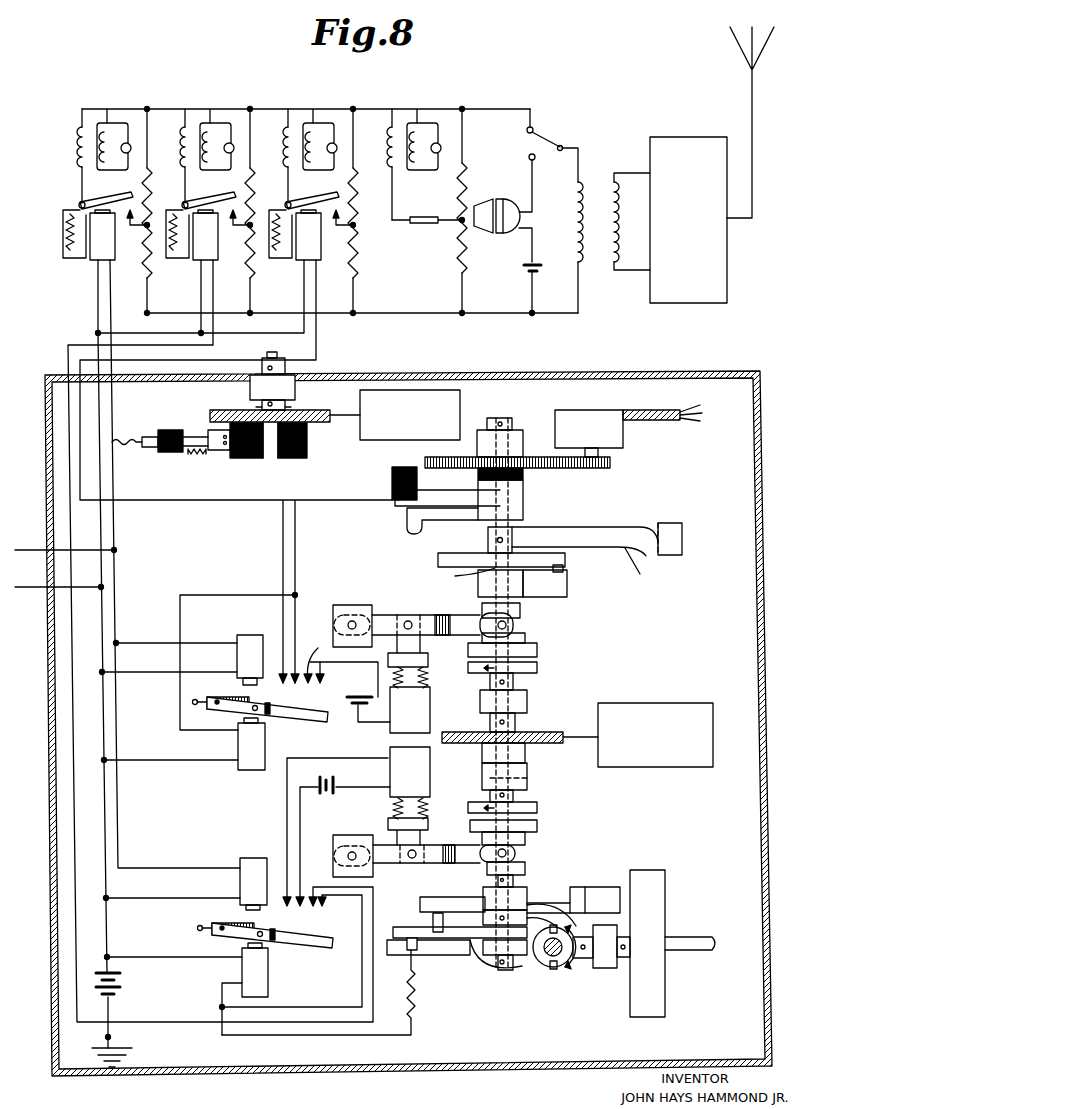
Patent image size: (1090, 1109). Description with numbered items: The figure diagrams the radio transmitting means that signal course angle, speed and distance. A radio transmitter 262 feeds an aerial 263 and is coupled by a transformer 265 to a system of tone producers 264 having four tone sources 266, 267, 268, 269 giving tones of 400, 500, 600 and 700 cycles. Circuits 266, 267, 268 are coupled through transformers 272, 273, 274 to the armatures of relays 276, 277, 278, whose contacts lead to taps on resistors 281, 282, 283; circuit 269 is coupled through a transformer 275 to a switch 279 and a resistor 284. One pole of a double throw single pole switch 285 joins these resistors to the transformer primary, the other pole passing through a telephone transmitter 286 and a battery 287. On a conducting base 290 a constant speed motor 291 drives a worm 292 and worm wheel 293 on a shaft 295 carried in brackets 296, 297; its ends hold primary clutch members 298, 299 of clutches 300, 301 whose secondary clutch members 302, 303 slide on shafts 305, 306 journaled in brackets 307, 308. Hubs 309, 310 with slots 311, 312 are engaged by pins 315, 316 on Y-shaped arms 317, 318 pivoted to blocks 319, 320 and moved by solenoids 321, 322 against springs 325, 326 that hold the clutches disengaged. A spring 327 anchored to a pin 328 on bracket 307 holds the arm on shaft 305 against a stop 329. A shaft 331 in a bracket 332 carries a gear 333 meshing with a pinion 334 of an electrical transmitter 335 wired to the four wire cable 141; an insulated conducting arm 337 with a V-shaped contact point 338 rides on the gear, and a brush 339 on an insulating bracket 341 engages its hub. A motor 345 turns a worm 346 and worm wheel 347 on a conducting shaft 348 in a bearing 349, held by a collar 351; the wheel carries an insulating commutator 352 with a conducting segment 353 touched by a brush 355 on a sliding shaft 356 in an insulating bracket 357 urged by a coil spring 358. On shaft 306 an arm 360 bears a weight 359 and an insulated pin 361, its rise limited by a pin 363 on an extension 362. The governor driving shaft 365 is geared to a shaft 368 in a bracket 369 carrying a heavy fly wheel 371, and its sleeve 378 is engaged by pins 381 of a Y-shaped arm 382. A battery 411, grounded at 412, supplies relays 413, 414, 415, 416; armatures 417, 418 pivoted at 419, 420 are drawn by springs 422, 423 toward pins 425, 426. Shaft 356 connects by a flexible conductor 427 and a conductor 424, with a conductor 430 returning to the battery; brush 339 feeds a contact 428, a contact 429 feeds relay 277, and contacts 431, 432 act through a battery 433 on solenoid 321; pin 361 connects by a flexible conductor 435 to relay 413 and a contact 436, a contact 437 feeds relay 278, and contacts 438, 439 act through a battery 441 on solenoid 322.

The four wire cable 141 is at (661, 421).
The radio transmitter 262 is at (727, 291).
The aerial 263 is at (735, 51).
The system of tone producers 264 is at (378, 336).
The transformer 265 is at (596, 172).
The tone source 266 is at (119, 126).
The tone source 267 is at (222, 126).
The tone source 268 is at (325, 126).
The tone source 269 is at (428, 126).
The transformer 272 is at (91, 125).
The transformer 273 is at (193, 125).
The transformer 274 is at (296, 125).
The transformer 275 is at (400, 124).
The relay 276 is at (92, 265).
The relay 277 is at (197, 262).
The relay 278 is at (300, 260).
The switch 279 is at (425, 218).
The resistor 281 is at (147, 270).
The resistor 282 is at (253, 272).
The resistor 283 is at (359, 263).
The resistor 284 is at (468, 182).
The double throw single pole switch 285 is at (556, 138).
The telephone transmitter 286 is at (506, 240).
The battery 287 is at (541, 272).
The base 290 is at (386, 1068).
The motor 291 is at (663, 703).
The worm 292 is at (525, 731).
The worm wheel 293 is at (554, 745).
The shaft 295 is at (528, 779).
The bracket 296 is at (528, 696).
The bracket 297 is at (482, 770).
The primary clutch member 298 is at (539, 668).
The primary clutch member 299 is at (539, 807).
The clutch 300 is at (438, 669).
The clutch 301 is at (438, 819).
The secondary clutch member 302 is at (539, 651).
The secondary clutch member 303 is at (539, 826).
The shaft 305 is at (460, 577).
The shaft 306 is at (497, 881).
The bracket 307 is at (568, 588).
The bracket 308 is at (527, 893).
The hub 309 is at (522, 612).
The hub 310 is at (527, 866).
The slot 311 is at (515, 627).
The slot 312 is at (518, 850).
The pin 315 is at (500, 622).
The pin 316 is at (498, 850).
The Y-shaped arm 317 is at (425, 616).
The Y-shaped arm 318 is at (420, 866).
The block 319 is at (348, 604).
The block 320 is at (347, 835).
The solenoid 321 is at (431, 706).
The solenoid 322 is at (431, 785).
The spring 325 is at (425, 678).
The spring 326 is at (600, 527).
The spring 327 is at (470, 553).
The pin 328 is at (565, 567).
The stop 329 is at (683, 545).
The shaft 331 is at (502, 417).
The bracket 332 is at (520, 436).
The gear 333 is at (526, 471).
The pinion 334 is at (612, 462).
The electrical transmitter 335 is at (606, 412).
The arm 337 is at (524, 507).
The V-shaped contact point 338 is at (408, 533).
The brush 339 is at (444, 490).
The bracket 341 is at (392, 478).
The motor 345 is at (460, 393).
The worm 346 is at (292, 403).
The worm wheel 347 is at (322, 424).
The shaft 348 is at (278, 356).
The bearing 349 is at (250, 391).
The collar 351 is at (286, 368).
The commutator 352 is at (298, 459).
The segment 353 is at (270, 459).
The brush 355 is at (214, 451).
The shaft 356 is at (178, 453).
The bracket 357 is at (155, 436).
The coil spring 358 is at (193, 434).
The weight 359 is at (598, 887).
The arm 360 is at (398, 926).
The pin 361 is at (417, 952).
The extension 362 is at (430, 897).
The pin 363 is at (433, 921).
The driving shaft 365 is at (548, 956).
The shaft 368 is at (700, 951).
The bracket 369 is at (607, 969).
The fly wheel 371 is at (666, 903).
The sleeve 378 is at (570, 960).
The pin 381 is at (553, 960).
The Y-shaped arm 382 is at (530, 955).
The four hundred cycle tone 400 is at (88, 82).
The battery 411 is at (124, 986).
The ground 412 is at (135, 1041).
The relay 413 is at (242, 971).
The relay 414 is at (240, 883).
The relay 415 is at (238, 753).
The relay 416 is at (237, 659).
The armature 417 is at (300, 946).
The armature 418 is at (298, 717).
The pivot 419 is at (224, 926).
The pivot 420 is at (215, 699).
The spring 422 is at (220, 935).
The spring 423 is at (225, 709).
The conductor 424 is at (61, 540).
The pin 425 is at (197, 929).
The pin 426 is at (192, 703).
The flexible conductor 427 is at (127, 446).
The contact 428 is at (311, 690).
The contact 429 is at (269, 686).
The conductor 430 is at (54, 600).
The contact 431 is at (337, 663).
The contact 432 is at (323, 681).
The battery 433 is at (368, 709).
The flexible conductor 435 is at (415, 1000).
The contact 436 is at (325, 905).
The contact 437 is at (332, 914).
The contact 438 is at (277, 911).
The contact 439 is at (309, 914).
The battery 441 is at (338, 782).
The five hundred cycle tone 500 is at (193, 82).
The six hundred cycle tone 600 is at (296, 80).
The seven hundred cycle tone 700 is at (401, 77).